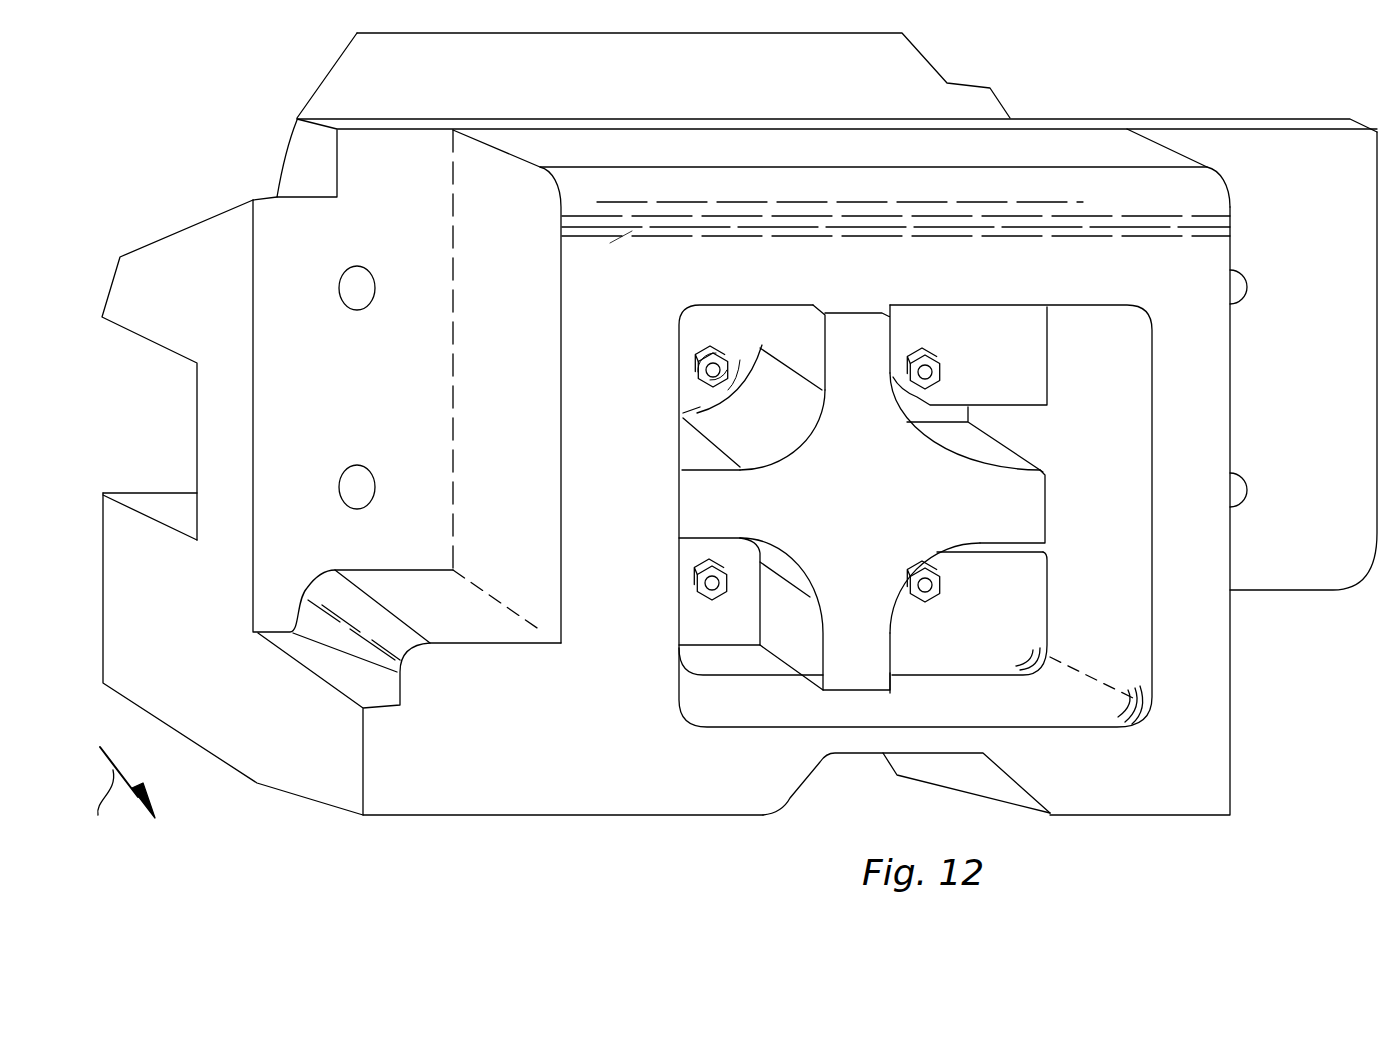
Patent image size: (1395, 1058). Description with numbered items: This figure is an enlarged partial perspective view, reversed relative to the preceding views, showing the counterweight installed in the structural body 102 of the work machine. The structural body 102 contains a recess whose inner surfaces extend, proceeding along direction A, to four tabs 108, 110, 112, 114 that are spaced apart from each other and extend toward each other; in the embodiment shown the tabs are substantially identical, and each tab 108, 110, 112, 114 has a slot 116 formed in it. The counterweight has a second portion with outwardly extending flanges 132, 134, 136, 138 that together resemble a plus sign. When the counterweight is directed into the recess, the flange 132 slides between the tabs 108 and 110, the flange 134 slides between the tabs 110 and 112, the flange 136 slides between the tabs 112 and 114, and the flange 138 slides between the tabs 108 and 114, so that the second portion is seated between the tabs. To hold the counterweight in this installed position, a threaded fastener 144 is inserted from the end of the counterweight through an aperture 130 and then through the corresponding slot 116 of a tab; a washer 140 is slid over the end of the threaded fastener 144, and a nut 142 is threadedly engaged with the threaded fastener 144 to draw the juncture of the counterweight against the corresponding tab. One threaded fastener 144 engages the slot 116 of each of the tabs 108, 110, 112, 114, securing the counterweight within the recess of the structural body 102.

The structural body 102 is at (1065, 147).
The tab 108 is at (982, 653).
The tab 110 is at (1023, 327).
The tab 112 is at (690, 333).
The tab 114 is at (697, 618).
The slot 116 is at (690, 378).
The aperture 130 is at (927, 347).
The flange 132 is at (1005, 500).
The flange 134 is at (862, 342).
The flange 136 is at (697, 500).
The flange 138 is at (843, 680).
The washer 140 is at (703, 340).
The nut 142 is at (728, 342).
The threaded fastener 144 is at (760, 345).
The direction A is at (111, 791).